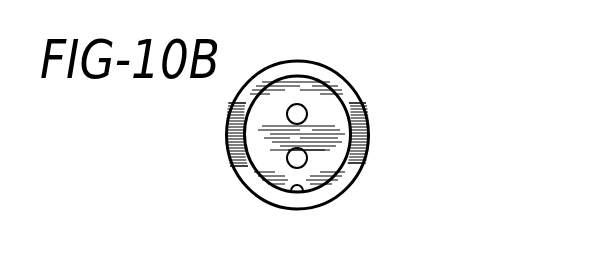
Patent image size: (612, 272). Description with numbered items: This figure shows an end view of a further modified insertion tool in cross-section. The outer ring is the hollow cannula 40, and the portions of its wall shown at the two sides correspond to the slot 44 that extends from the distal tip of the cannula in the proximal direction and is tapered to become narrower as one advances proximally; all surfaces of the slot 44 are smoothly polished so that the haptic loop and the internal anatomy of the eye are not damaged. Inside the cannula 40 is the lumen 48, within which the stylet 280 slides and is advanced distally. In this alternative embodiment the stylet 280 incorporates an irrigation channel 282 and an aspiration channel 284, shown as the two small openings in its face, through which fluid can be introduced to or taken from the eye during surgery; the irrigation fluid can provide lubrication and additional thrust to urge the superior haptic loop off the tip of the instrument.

The cannula 40 is at (318, 58).
The slot 44 is at (231, 113).
The lumen 48 is at (305, 192).
The stylet 280 is at (327, 153).
The irrigation channel 282 is at (304, 108).
The aspiration channel 284 is at (296, 166).